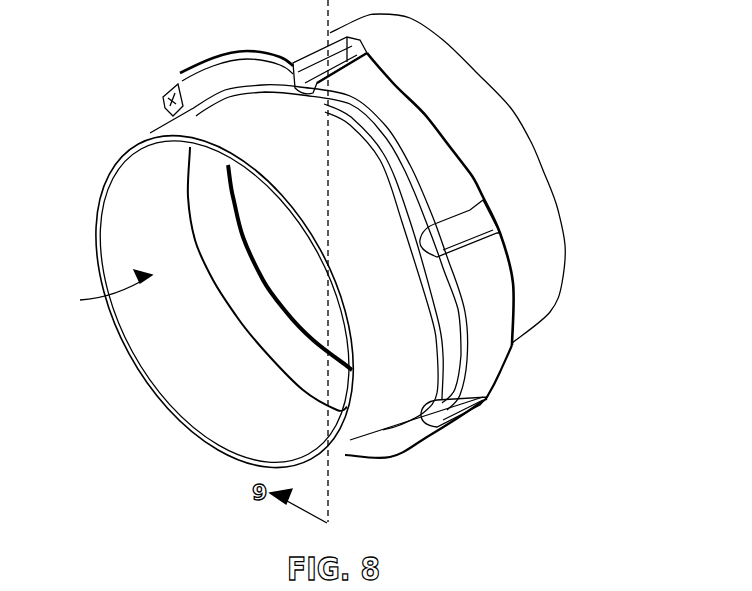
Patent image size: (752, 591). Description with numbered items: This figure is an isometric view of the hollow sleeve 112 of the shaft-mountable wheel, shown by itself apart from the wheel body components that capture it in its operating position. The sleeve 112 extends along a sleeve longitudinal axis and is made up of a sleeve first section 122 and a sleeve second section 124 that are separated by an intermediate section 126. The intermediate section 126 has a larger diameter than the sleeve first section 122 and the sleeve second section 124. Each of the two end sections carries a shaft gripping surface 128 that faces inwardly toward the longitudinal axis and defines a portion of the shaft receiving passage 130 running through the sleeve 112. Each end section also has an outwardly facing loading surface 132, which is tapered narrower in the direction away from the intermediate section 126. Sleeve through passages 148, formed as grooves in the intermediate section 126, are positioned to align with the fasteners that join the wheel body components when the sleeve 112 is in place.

The sleeve 112 is at (336, 256).
The sleeve first section 122 is at (564, 239).
The sleeve second section 124 is at (137, 360).
The intermediate section 126 is at (500, 364).
The shaft gripping surface 128 is at (312, 280).
The shaft receiving passage 130 is at (89, 291).
The loading surface 132 is at (355, 203).
The sleeve through passages 148 is at (347, 63).